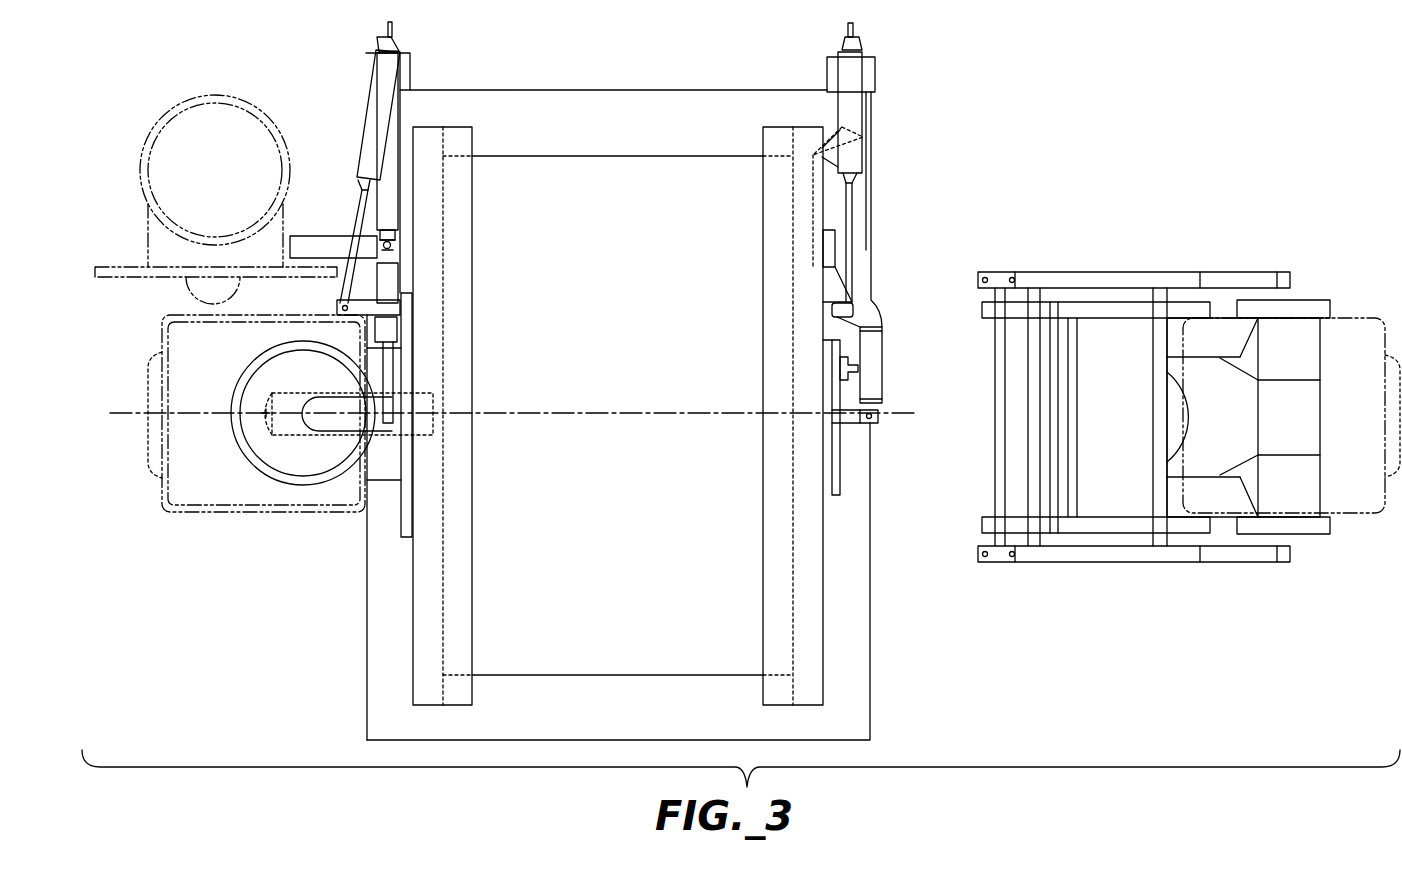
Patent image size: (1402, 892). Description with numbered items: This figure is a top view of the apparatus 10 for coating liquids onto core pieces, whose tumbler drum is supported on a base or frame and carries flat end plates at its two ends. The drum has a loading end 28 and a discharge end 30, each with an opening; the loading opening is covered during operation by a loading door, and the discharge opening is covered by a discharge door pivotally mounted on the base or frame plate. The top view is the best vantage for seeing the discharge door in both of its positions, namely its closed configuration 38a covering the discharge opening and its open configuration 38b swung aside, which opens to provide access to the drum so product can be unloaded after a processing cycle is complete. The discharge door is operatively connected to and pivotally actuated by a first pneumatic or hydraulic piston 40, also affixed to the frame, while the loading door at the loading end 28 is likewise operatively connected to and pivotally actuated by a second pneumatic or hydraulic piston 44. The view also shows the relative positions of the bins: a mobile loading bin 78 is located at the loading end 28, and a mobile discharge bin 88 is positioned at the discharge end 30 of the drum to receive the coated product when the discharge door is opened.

The apparatus for coating liquids onto core pieces 10 is at (236, 73).
The loading end 28 is at (870, 630).
The discharge end 30 is at (367, 592).
The closed configuration of discharge door 38a is at (313, 470).
The open configuration of discharge door 38b is at (287, 133).
The first pneumatic or hydraulic piston 40 is at (377, 117).
The second pneumatic or hydraulic piston 44 is at (848, 82).
The mobile loading bin 78 is at (1337, 518).
The mobile discharge bin 88 is at (160, 488).